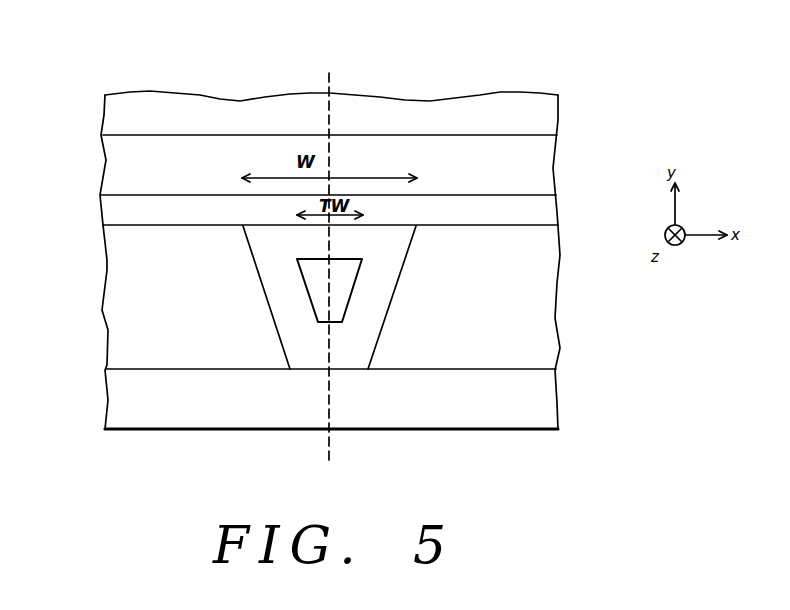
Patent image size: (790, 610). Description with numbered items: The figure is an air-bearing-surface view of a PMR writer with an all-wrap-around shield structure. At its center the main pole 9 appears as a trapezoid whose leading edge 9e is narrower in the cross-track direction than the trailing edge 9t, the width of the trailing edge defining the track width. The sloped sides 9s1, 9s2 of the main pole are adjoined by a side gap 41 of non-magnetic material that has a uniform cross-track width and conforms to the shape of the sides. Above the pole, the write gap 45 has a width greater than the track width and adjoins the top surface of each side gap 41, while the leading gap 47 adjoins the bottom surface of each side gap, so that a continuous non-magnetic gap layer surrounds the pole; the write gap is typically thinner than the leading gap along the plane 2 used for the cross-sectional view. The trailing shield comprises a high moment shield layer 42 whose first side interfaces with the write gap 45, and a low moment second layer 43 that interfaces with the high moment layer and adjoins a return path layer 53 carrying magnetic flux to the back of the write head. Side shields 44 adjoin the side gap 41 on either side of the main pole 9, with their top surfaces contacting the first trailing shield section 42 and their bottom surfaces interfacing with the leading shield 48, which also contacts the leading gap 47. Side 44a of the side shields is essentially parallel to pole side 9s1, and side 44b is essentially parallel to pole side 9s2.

The plane 2 is at (328, 267).
The main pole 9 is at (448, 290).
The trailing edge 9t is at (177, 273).
The leading edge 9e is at (378, 396).
The sloped side 9s1 is at (403, 388).
The sloped side 9s2 is at (256, 389).
The side gap 41 is at (331, 320).
The high moment shield layer 42 is at (355, 208).
The second trailing shield layer 43 is at (356, 158).
The side shields 44 is at (331, 315).
The side 44a is at (447, 347).
The side 44b is at (210, 347).
The write gap 45 is at (356, 245).
The leading gap 47 is at (291, 408).
The leading shield 48 is at (357, 391).
The return path layer 53 is at (357, 111).